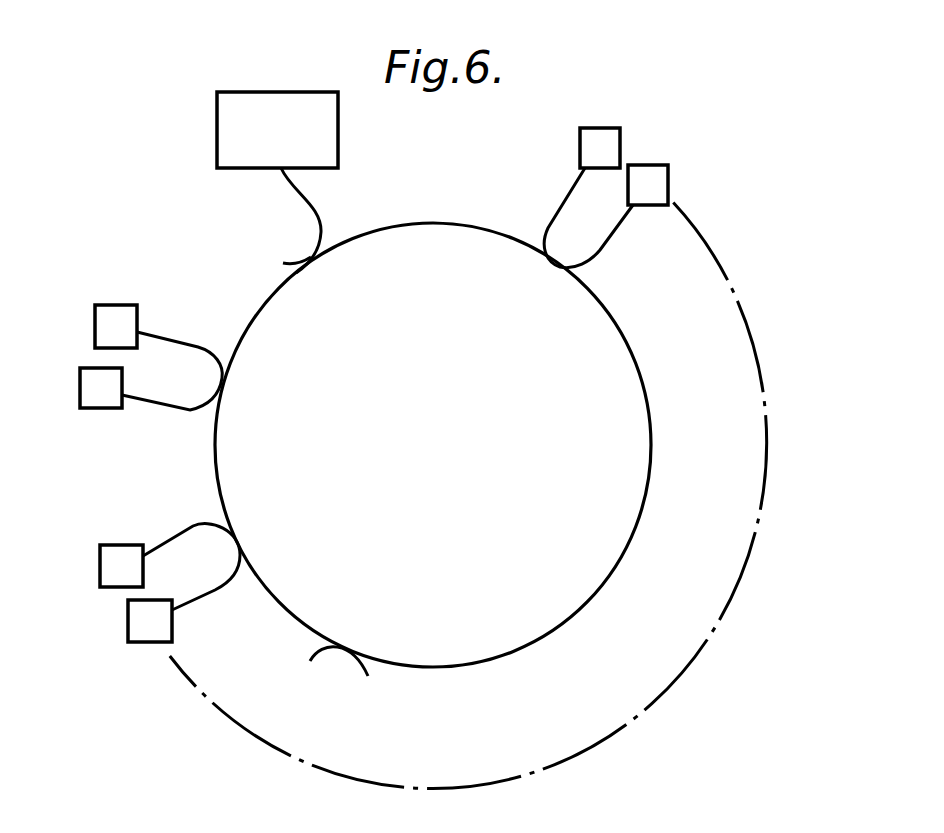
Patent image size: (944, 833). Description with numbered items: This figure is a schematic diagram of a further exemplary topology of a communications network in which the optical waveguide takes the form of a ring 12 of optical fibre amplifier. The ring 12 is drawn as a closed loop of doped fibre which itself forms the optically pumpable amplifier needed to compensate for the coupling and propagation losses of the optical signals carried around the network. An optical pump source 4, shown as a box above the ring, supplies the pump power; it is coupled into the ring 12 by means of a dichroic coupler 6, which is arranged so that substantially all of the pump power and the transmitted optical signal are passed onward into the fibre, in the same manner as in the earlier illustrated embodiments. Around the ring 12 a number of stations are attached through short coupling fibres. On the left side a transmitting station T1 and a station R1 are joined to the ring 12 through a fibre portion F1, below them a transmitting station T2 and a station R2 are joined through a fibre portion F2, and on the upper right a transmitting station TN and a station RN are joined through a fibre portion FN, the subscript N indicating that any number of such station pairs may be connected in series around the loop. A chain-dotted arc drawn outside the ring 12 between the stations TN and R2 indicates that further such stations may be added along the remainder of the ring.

The optical pump source 4 is at (338, 129).
The dichroic coupler 6 is at (312, 258).
The ring 12 is at (402, 222).
The optical waveguide portion F1 is at (214, 441).
The optical waveguide portion F2 is at (272, 598).
The Nth fiber coupler FN is at (483, 223).
The first transmitter T1 is at (120, 317).
The second transmitter T2 is at (115, 545).
The Nth transmitter TN is at (665, 182).
The first receiver R1 is at (96, 408).
The second receiver R2 is at (143, 642).
The Nth receiver RN is at (582, 130).